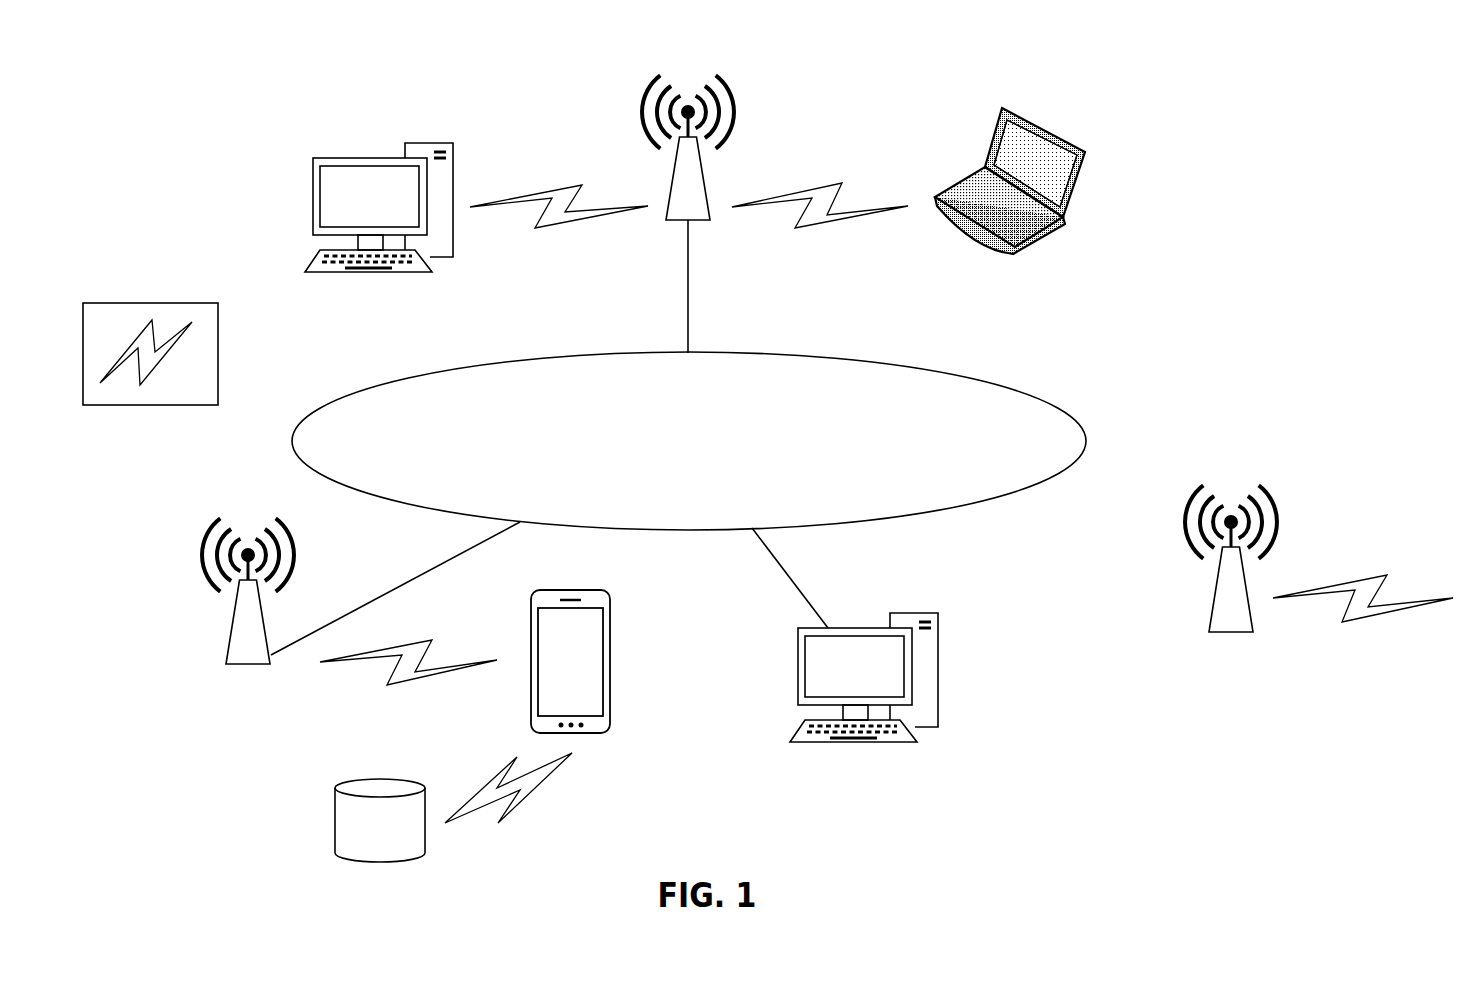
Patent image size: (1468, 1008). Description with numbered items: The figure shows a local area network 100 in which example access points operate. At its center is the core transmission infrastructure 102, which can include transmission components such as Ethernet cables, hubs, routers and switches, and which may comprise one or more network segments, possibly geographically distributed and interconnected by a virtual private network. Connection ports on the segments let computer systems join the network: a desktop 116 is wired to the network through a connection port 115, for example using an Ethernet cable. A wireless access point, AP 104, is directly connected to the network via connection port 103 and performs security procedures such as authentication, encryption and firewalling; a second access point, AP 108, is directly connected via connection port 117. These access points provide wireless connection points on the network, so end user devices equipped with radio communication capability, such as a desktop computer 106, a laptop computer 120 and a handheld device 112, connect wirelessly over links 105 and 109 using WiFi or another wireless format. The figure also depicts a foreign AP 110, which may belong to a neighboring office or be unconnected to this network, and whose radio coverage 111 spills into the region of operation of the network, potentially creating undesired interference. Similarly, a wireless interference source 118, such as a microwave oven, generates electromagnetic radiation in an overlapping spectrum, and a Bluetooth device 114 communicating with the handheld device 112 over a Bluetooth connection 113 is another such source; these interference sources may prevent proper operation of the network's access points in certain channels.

The local area network 100 is at (243, 124).
The core transmission infrastructure 102 is at (872, 358).
The connection port 103 is at (688, 282).
The access point 104 is at (718, 80).
The wireless link 105 is at (537, 190).
The desktop computer 106 is at (358, 158).
The access point 108 is at (248, 665).
The wireless link 109 is at (420, 638).
The foreign access point 110 is at (1231, 633).
The radio coverage 111 is at (1356, 577).
The handheld device 112 is at (570, 586).
The Bluetooth connection 113 is at (520, 798).
The Bluetooth device 114 is at (383, 779).
The desktop 116 is at (853, 628).
The connection port 115 is at (808, 602).
The connection port 117 is at (331, 622).
The wireless interference source 118 is at (147, 303).
The laptop computer 120 is at (1033, 118).